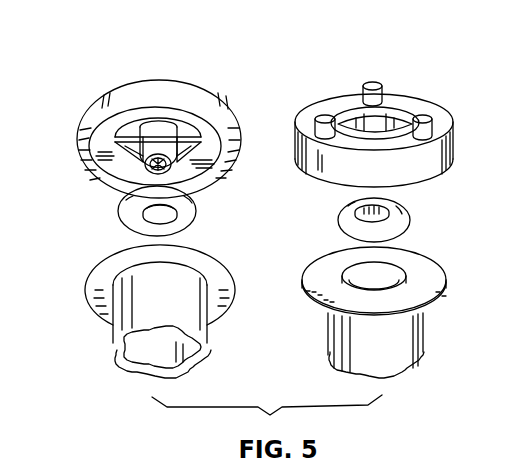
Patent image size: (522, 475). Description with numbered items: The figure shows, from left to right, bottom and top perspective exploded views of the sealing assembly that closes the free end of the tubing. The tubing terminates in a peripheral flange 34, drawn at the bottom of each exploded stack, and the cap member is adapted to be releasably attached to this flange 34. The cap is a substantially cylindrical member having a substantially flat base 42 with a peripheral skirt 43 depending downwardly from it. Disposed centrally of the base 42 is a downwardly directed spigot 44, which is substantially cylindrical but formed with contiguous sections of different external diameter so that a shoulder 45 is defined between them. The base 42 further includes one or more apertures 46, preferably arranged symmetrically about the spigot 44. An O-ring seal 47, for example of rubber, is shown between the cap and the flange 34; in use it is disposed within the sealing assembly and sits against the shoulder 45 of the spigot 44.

The peripheral flange 34 is at (333, 307).
The base 42 is at (345, 107).
The peripheral skirt 43 is at (98, 115).
The spigot 44 is at (158, 132).
The shoulder 45 is at (148, 148).
The apertures 46 is at (149, 130).
The O-ring seal 47 is at (350, 213).